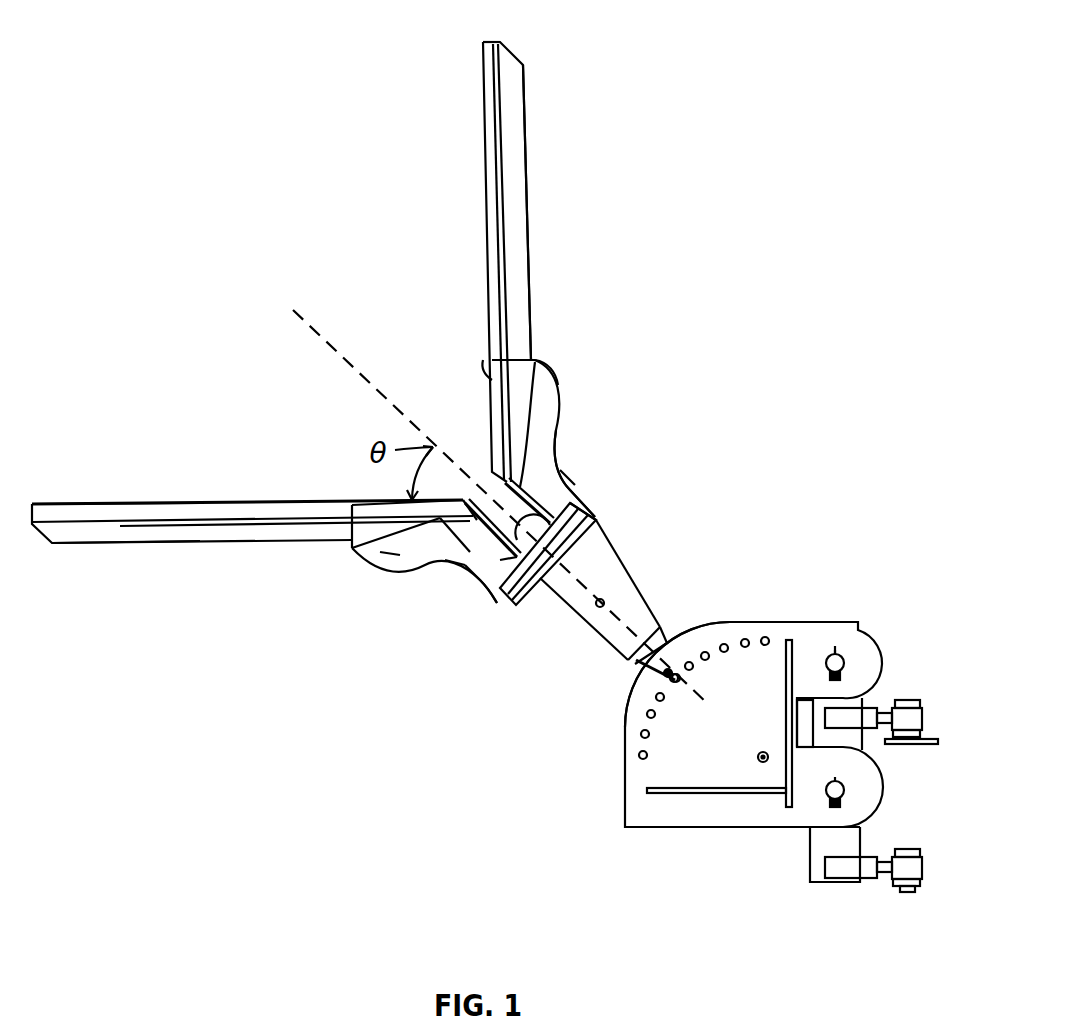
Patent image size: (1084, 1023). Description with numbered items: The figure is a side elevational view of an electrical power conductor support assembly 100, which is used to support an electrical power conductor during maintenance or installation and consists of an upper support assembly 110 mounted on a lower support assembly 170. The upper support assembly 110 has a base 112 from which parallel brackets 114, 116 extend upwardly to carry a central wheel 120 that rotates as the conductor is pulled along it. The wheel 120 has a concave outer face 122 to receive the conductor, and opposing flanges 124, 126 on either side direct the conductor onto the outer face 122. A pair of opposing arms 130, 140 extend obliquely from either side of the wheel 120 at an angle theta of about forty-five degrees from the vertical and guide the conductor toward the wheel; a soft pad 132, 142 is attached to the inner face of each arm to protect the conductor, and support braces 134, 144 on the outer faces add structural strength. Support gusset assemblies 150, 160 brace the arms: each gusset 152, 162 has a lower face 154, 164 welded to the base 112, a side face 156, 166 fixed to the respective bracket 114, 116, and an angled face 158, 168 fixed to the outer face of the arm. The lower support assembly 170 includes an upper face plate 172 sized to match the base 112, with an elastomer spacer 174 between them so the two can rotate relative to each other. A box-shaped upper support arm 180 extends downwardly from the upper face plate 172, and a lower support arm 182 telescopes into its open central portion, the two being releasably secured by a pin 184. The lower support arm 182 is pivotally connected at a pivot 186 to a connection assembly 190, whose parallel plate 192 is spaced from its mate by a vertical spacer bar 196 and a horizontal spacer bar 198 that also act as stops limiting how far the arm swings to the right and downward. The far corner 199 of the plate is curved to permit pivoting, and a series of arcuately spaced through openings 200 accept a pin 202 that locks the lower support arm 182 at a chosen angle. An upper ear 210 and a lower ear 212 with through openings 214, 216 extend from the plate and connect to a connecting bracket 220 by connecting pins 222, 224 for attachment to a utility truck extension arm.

The electrical power conductor support assembly 100 is at (756, 38).
The upper support assembly 110 is at (543, 360).
The base 112 is at (495, 573).
The bracket 114 is at (460, 585).
The bracket 116 is at (565, 440).
The central wheel 120 is at (460, 566).
The concave outer face 122 is at (493, 482).
The flange 124 is at (362, 546).
The flange 126 is at (533, 388).
The arm 130 is at (213, 503).
The pad 132 is at (118, 510).
The support brace 134 is at (152, 536).
The arm 140 is at (488, 168).
The pad 142 is at (484, 82).
The support brace 144 is at (528, 208).
The support gusset assembly 150 is at (390, 552).
The gusset 152 is at (362, 548).
The lower face 154 is at (470, 590).
The side face 156 is at (505, 575).
The angled face 158 is at (375, 517).
The support gusset assembly 160 is at (565, 372).
The gusset 162 is at (553, 353).
The lower face 164 is at (598, 492).
The side face 166 is at (575, 466).
The angled face 168 is at (490, 378).
The lower support assembly 170 is at (622, 662).
The upper face plate 172 is at (600, 530).
The elastomer spacer 174 is at (587, 508).
The upper support arm 180 is at (633, 610).
The lower support arm 182 is at (660, 638).
The pin 184 is at (595, 612).
The pivot 186 is at (783, 782).
The connection assembly 190 is at (627, 783).
The plate 192 is at (633, 823).
The vertical spacer bar 196 is at (763, 767).
The horizontal spacer bar 198 is at (678, 795).
The far corner 199 is at (630, 695).
The through openings 200 is at (766, 638).
The pin 202 is at (683, 678).
The upper ear 210 is at (848, 642).
The lower ear 212 is at (862, 802).
The through opening 214 is at (845, 662).
The through opening 216 is at (845, 787).
The connecting bracket 220 is at (808, 858).
The connecting pin 222 is at (835, 645).
The connecting pin 224 is at (815, 785).